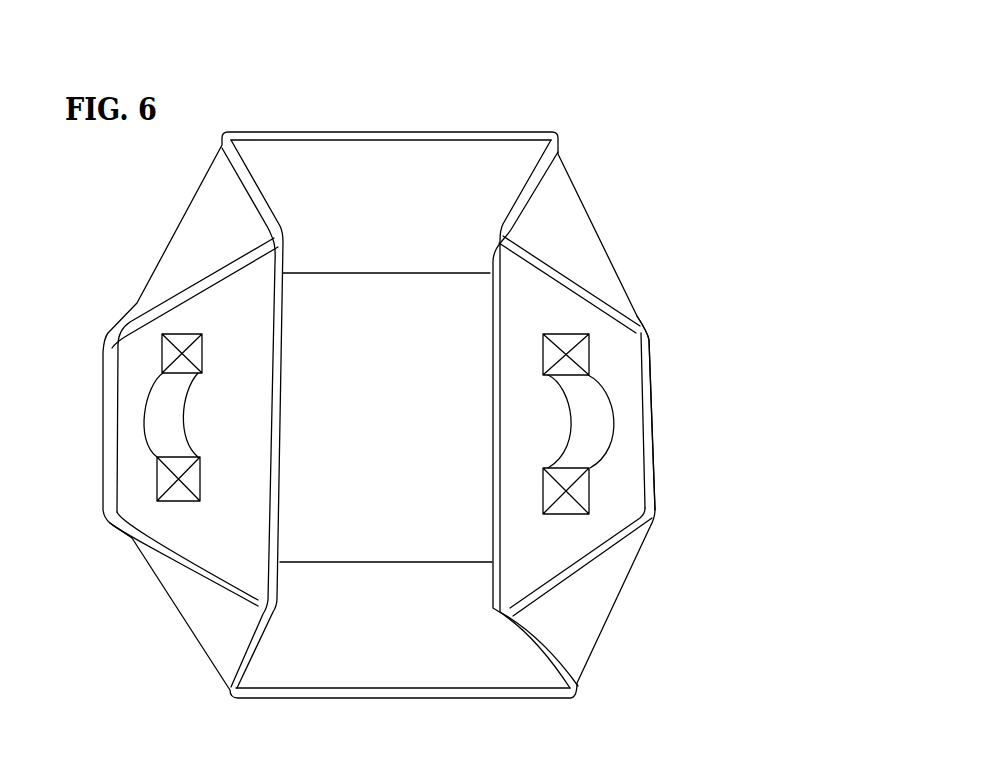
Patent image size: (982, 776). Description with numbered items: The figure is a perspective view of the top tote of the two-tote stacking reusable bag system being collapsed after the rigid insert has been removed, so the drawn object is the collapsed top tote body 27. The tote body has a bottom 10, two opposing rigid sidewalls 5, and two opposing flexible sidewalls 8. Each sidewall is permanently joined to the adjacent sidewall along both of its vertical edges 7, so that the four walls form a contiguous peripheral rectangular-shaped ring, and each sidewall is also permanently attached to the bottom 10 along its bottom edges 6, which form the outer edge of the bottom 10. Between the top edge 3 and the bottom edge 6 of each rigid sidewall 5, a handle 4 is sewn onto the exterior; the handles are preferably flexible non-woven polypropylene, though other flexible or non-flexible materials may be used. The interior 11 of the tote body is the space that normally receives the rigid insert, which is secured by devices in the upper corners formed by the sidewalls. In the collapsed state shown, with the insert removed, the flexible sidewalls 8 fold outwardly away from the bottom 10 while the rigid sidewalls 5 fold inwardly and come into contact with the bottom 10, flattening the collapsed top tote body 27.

The collapsed top tote body 27 is at (746, 212).
The flexible sidewall 8 is at (311, 165).
The top edge 3 is at (550, 132).
The interior 11 is at (545, 366).
The bottom 10 is at (432, 413).
The rigid sidewall 5 is at (613, 340).
The handle 4 is at (587, 425).
The bottom edge 6 is at (649, 489).
The vertical edge 7 is at (607, 545).